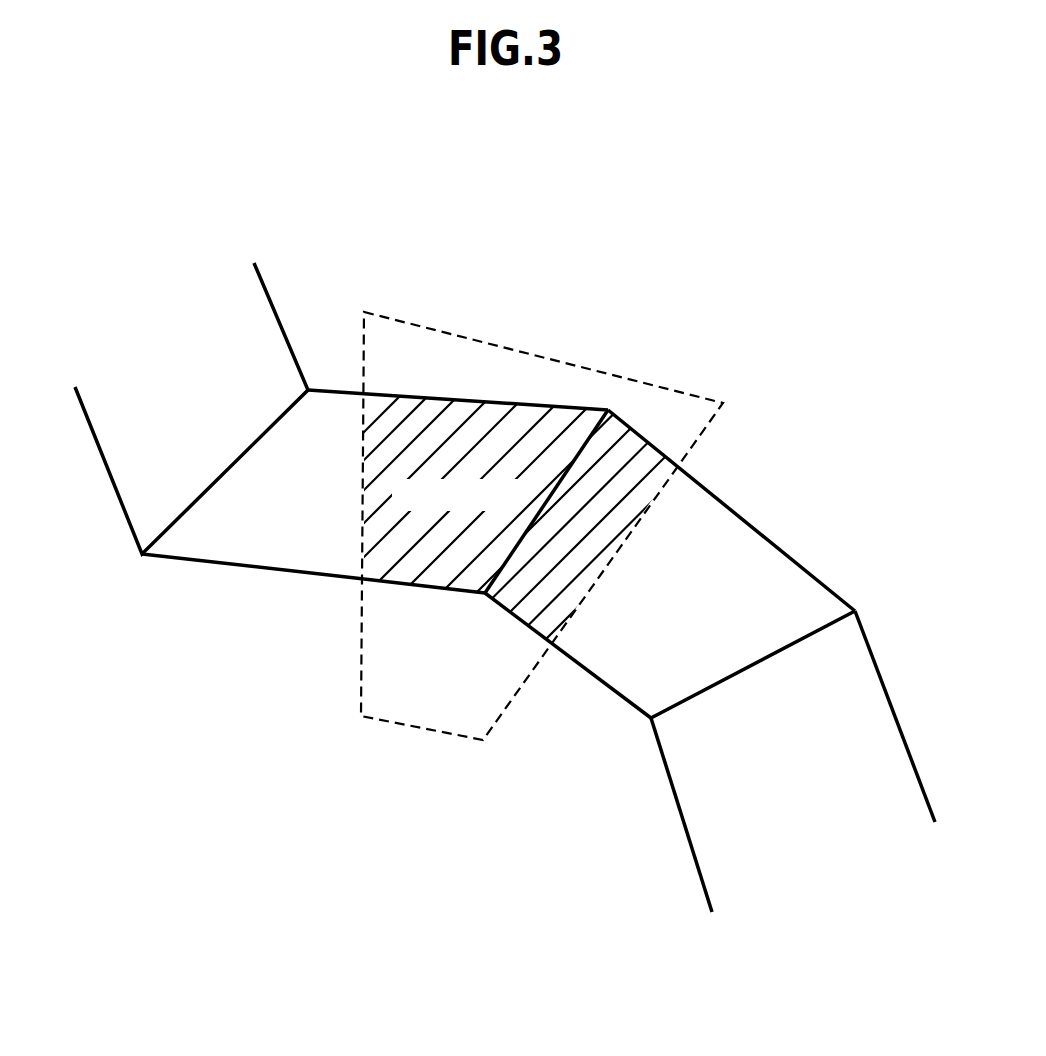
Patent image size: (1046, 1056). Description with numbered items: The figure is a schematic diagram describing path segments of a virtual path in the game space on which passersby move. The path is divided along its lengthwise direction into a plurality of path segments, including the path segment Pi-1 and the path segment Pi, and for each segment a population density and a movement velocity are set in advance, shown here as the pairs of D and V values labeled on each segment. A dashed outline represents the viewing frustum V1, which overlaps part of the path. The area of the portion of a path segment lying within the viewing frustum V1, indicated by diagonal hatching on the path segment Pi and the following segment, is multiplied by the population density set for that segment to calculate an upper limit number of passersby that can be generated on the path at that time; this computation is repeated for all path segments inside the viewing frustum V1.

The viewing frustum V1 is at (515, 698).
The path segment Pi-1 is at (219, 421).
The path segment Pi is at (532, 400).